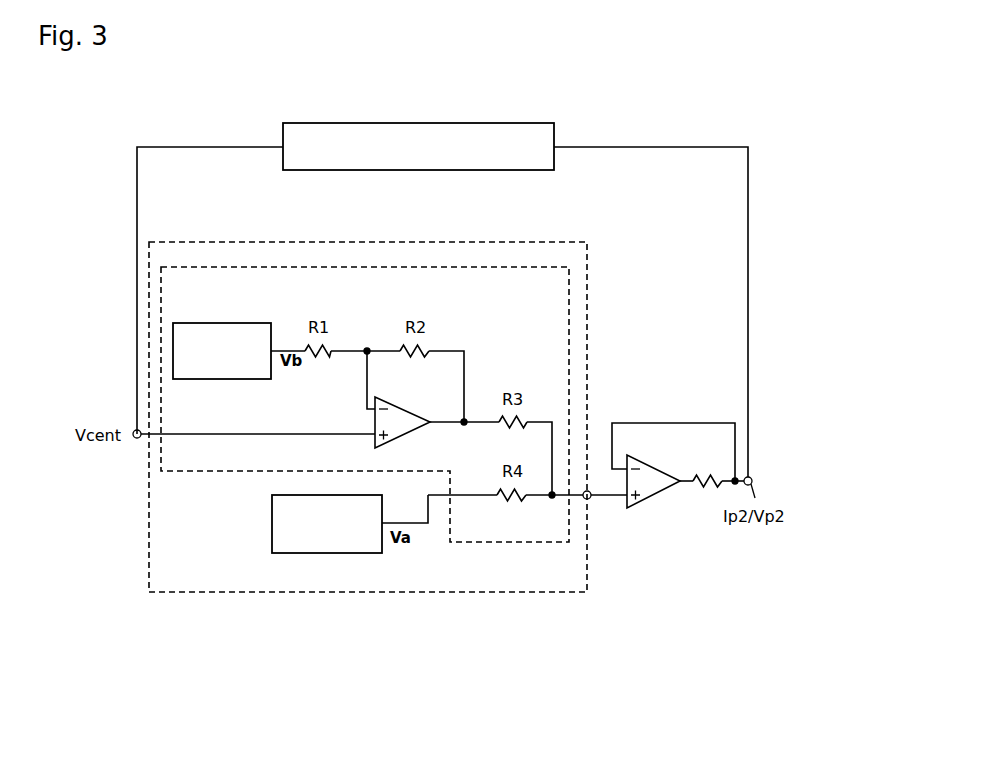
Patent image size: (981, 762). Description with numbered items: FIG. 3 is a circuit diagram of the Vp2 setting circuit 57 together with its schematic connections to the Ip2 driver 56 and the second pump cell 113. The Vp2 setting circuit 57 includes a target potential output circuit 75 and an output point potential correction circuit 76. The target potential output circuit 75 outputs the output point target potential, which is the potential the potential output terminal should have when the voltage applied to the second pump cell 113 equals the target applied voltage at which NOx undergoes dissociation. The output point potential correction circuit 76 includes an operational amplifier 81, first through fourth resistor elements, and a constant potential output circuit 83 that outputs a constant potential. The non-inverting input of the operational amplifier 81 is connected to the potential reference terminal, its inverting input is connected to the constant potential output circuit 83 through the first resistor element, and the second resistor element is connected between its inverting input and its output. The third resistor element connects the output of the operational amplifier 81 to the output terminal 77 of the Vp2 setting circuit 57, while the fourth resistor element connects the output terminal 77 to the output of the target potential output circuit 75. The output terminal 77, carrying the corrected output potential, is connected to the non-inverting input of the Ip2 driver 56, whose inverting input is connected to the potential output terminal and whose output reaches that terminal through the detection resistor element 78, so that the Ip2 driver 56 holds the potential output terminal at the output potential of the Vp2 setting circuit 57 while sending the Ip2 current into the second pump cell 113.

The second pump cell 113 is at (478, 123).
The Vp2 setting circuit 57 is at (232, 592).
The output point potential correction circuit 76 is at (232, 471).
The constant potential output circuit 83 is at (222, 351).
The operational amplifier 81 is at (402, 407).
The target potential output circuit 75 is at (327, 524).
The output terminal 77 is at (590, 498).
The Ip2 driver 56 is at (650, 499).
The detection resistor element 78 is at (700, 472).